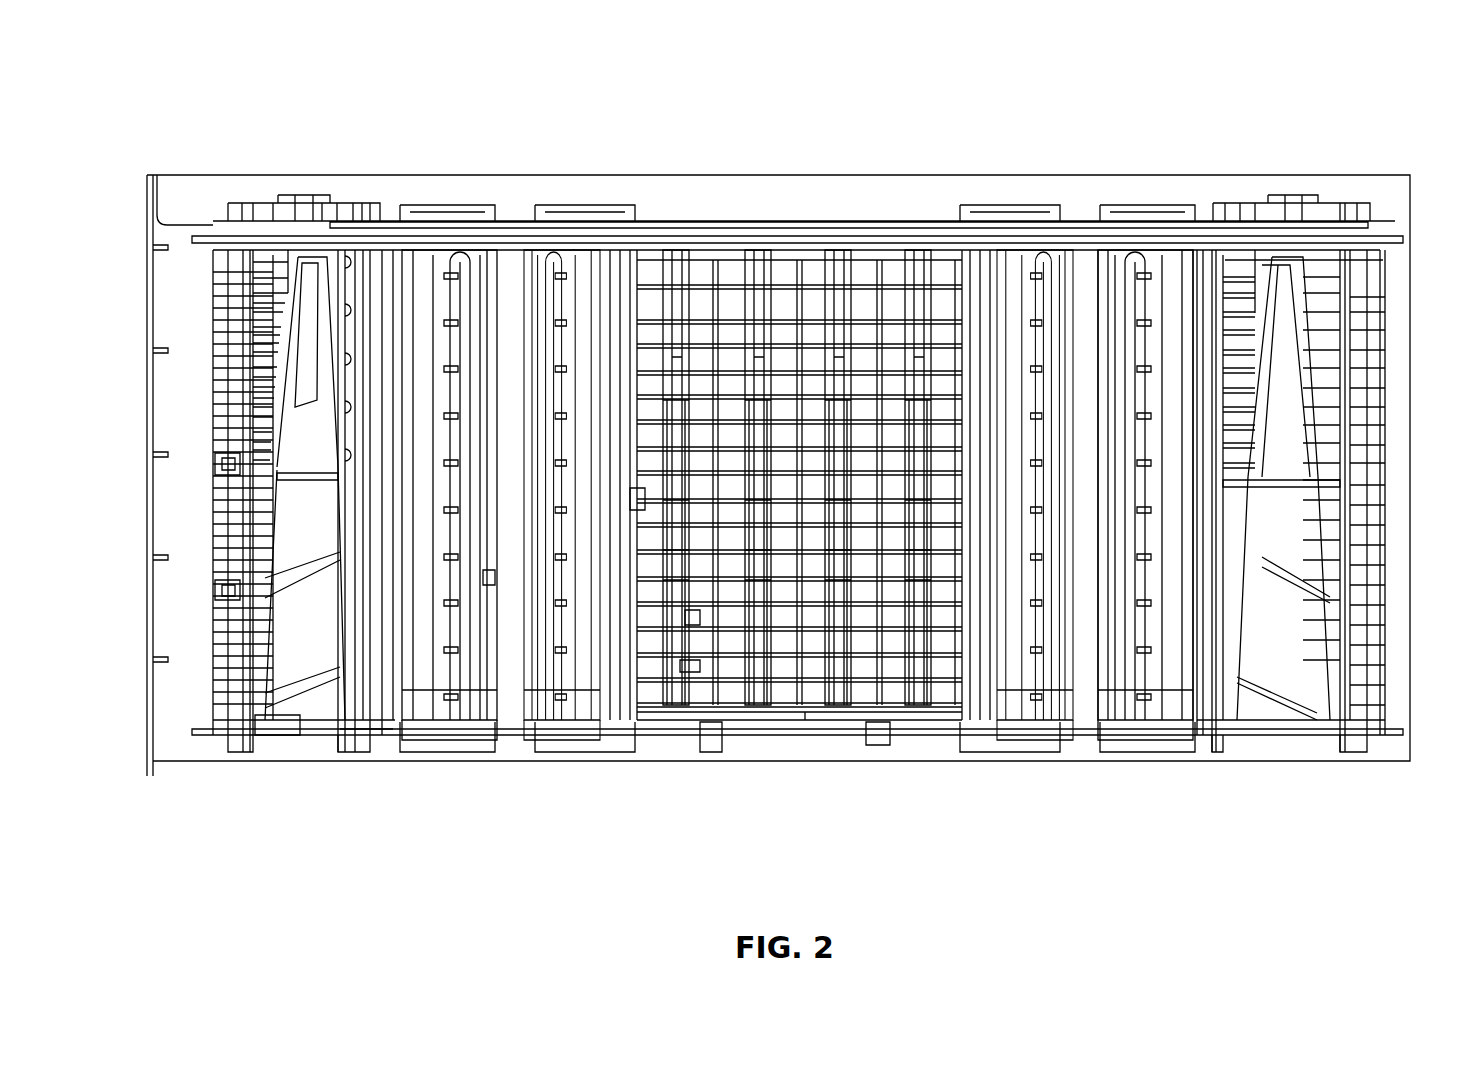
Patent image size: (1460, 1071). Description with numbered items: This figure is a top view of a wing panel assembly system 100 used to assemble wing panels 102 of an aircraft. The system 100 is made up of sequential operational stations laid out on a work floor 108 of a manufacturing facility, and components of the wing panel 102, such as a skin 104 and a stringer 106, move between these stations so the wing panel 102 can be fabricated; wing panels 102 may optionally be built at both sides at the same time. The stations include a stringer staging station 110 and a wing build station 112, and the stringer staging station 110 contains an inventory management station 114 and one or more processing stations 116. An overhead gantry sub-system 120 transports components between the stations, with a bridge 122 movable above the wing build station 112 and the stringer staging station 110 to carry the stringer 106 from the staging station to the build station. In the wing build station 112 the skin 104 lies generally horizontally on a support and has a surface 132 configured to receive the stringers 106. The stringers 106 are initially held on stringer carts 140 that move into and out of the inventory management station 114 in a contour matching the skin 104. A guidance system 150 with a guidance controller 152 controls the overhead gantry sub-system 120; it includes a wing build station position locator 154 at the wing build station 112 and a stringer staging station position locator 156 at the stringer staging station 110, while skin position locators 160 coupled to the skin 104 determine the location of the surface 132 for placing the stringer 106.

The wing panel assembly system 100 is at (846, 90).
The wing panel 102 is at (295, 663).
The skin 104 is at (296, 538).
The stringer 106 is at (690, 665).
The work floor 108 is at (836, 752).
The stringer staging station 110 is at (797, 208).
The wing build station 112 is at (335, 160).
The inventory management station 114 is at (883, 200).
The processing station 116 is at (1082, 198).
The overhead gantry sub-system 120 is at (372, 313).
The bridge 122 is at (395, 257).
The surface 132 is at (297, 438).
The stringer cart 140 is at (692, 617).
The guidance system 150 is at (222, 587).
The guidance controller 152 is at (220, 470).
The wing build station position locator 154 is at (212, 466).
The stringer staging station position locator 156 is at (704, 754).
The skin position locator 160 is at (285, 633).